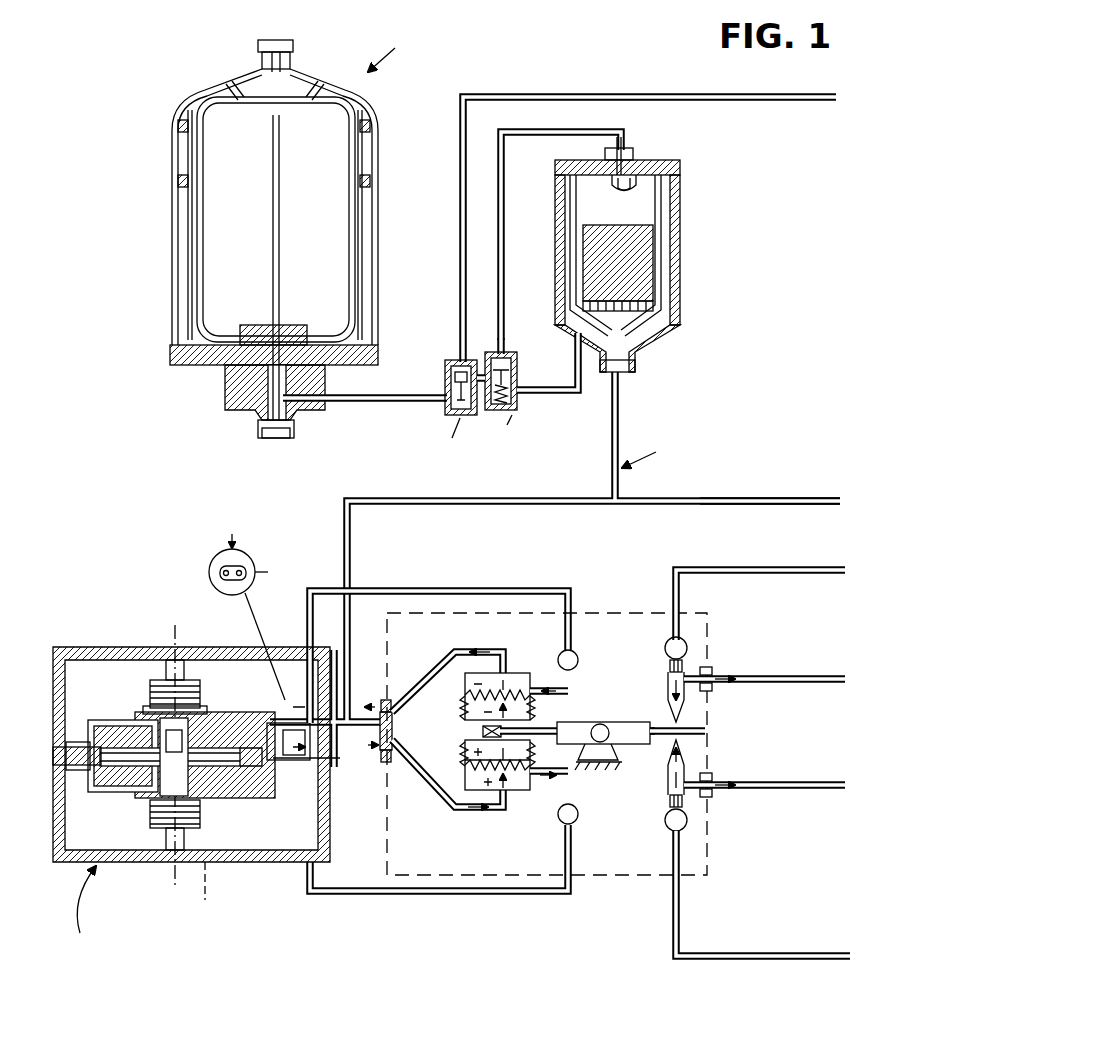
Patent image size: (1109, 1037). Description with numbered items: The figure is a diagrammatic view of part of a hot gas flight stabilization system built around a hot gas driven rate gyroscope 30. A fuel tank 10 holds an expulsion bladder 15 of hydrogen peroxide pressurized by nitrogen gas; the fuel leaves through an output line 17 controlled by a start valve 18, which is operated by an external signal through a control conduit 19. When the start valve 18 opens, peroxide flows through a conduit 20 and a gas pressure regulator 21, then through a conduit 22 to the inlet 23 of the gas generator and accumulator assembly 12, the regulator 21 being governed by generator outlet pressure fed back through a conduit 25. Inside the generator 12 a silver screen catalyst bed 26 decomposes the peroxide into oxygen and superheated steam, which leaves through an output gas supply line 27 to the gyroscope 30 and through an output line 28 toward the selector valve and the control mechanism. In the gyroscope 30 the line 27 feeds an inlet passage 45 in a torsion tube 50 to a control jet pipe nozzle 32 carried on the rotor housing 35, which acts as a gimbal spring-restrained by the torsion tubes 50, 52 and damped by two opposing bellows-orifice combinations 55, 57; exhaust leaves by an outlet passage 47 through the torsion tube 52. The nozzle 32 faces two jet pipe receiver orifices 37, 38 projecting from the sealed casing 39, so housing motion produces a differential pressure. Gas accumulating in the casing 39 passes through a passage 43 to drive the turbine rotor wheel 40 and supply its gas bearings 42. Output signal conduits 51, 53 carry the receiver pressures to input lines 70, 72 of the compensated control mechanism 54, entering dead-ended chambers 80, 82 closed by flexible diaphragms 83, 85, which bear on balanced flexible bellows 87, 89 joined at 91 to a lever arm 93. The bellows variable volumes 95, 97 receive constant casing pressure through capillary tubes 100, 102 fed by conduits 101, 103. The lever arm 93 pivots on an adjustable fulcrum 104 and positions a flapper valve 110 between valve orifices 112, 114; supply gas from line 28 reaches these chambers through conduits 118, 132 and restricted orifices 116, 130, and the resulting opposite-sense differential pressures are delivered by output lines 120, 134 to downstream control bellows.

The fuel tank 10 is at (210, 72).
The gas generator and accumulator assembly 12 is at (690, 276).
The expulsion bladder 15 is at (347, 133).
The output line 17 is at (377, 404).
The start valve 18 is at (452, 362).
The control conduit 19 is at (640, 95).
The conduit 20 is at (478, 358).
The gas pressure regulator 21 is at (517, 366).
The conduit 22 is at (507, 237).
The inlet 23 is at (638, 175).
The conduit 25 is at (578, 372).
The silver screen catalyst bed 26 is at (641, 246).
The output gas supply line 27 is at (632, 409).
The output line 28 is at (688, 506).
The rate gyroscope 30 is at (133, 642).
The control jet pipe nozzle 32 is at (276, 722).
The rotor housing 35 is at (222, 718).
The jet pipe receiver orifice 37 is at (300, 720).
The jet pipe receiver orifice 38 is at (246, 569).
The sealed casing 39 is at (226, 648).
The gyroscope rotor wheel 40 is at (233, 770).
The gas bearings 42 is at (108, 706).
The passage 43 is at (263, 770).
The inlet passage 45 is at (286, 760).
The outlet passage 47 is at (78, 748).
The torsion tube 50 is at (306, 788).
The output signal conduit 51 is at (379, 712).
The torsion tube 52 is at (80, 772).
The output signal conduit 53 is at (384, 756).
The compensated control mechanism 54 is at (590, 611).
The bellows-orifice combination 55 is at (152, 694).
The bellows-orifice combination 57 is at (197, 819).
The input line 70 is at (436, 672).
The input line 72 is at (451, 777).
The dead-ended chamber 80 is at (500, 673).
The dead-ended chamber 82 is at (516, 790).
The flexible diaphragm 83 is at (549, 677).
The flexible diaphragm 85 is at (540, 763).
The flexible bellows 87 is at (545, 694).
The flexible bellows 89 is at (462, 760).
The connection 91 is at (482, 732).
The lever arm 93 is at (546, 729).
The variable volume 95 is at (462, 706).
The variable volume 97 is at (466, 766).
The capillary tube 100 is at (569, 683).
The conduit 101 is at (428, 592).
The capillary tube 102 is at (570, 791).
The conduit 103 is at (452, 893).
The fulcrum 104 is at (601, 731).
The flapper valve 110 is at (706, 729).
The valve orifice 112 is at (673, 718).
The valve orifice 114 is at (674, 748).
The restricted orifice 116 is at (669, 666).
The conduit 118 is at (762, 574).
The output line 120 is at (775, 684).
The restricted orifice 130 is at (668, 804).
The conduit 132 is at (784, 958).
The output line 134 is at (785, 791).